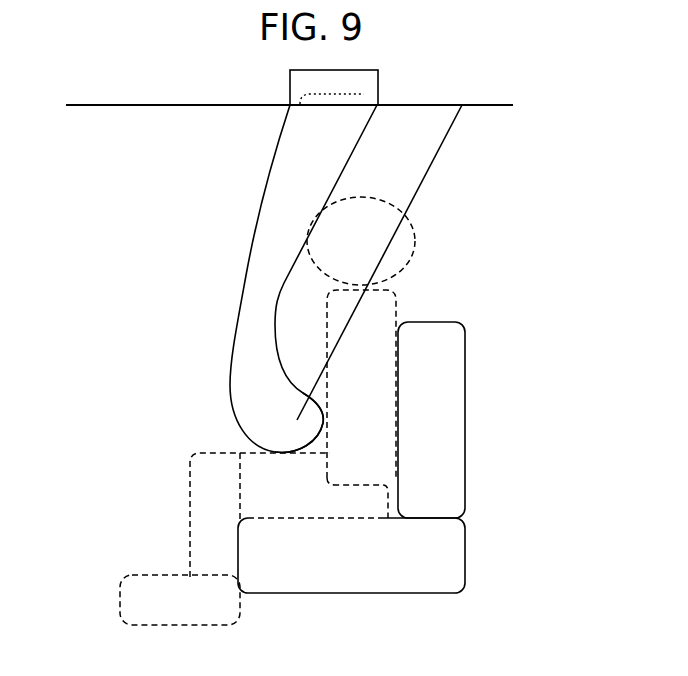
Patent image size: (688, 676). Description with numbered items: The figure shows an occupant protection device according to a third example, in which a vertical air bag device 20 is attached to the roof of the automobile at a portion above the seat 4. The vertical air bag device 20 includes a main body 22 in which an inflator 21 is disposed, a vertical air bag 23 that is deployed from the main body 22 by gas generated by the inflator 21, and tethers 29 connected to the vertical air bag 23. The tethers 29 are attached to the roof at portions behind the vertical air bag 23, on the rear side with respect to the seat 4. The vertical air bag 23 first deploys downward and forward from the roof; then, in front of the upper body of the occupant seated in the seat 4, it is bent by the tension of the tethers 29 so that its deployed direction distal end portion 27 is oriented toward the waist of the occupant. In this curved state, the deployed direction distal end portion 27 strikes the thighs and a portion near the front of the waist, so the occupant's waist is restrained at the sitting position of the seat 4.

The seat 4 is at (437, 552).
The vertical air bag device 20 is at (197, 322).
The inflator 21 is at (305, 106).
The main body 22 is at (290, 73).
The vertical air bag 23 is at (267, 251).
The deployed direction distal end portion 27 is at (282, 432).
The tethers 29 is at (436, 165).